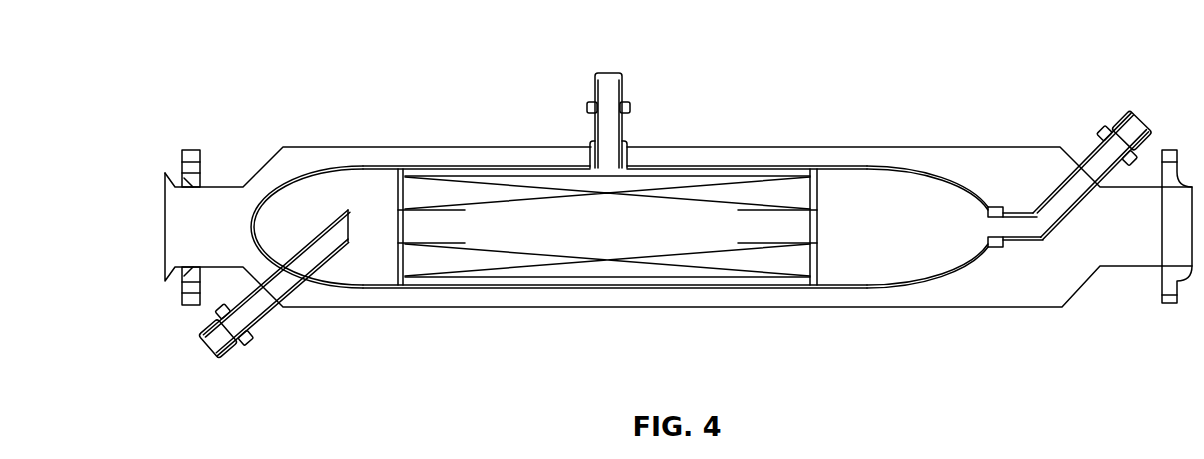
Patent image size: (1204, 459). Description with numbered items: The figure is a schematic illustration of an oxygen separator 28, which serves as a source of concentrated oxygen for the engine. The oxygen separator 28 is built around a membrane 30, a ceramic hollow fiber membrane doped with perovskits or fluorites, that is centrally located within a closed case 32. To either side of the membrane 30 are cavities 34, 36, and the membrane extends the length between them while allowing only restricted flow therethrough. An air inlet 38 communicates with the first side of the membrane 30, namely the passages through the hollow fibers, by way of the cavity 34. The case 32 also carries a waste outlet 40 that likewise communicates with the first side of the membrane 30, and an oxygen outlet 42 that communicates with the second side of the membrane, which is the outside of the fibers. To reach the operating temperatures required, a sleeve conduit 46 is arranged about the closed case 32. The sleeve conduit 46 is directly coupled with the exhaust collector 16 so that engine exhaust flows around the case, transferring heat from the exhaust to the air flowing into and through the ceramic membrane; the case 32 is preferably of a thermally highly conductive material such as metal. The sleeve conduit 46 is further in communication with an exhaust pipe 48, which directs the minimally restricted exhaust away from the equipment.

The exhaust collector 16 is at (193, 149).
The oxygen separator 28 is at (450, 310).
The membrane 30 is at (603, 230).
The closed case 32 is at (910, 170).
The cavity 34 is at (367, 190).
The cavity 36 is at (877, 238).
The air inlet 38 is at (253, 310).
The waste outlet 40 is at (1098, 164).
The oxygen outlet 42 is at (610, 97).
The sleeve conduit 46 is at (800, 312).
The exhaust pipe 48 is at (1167, 305).